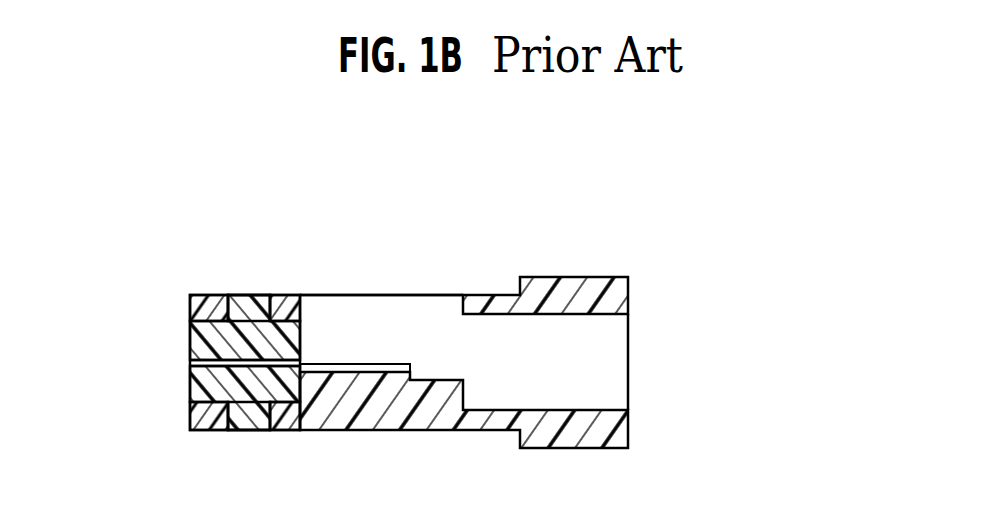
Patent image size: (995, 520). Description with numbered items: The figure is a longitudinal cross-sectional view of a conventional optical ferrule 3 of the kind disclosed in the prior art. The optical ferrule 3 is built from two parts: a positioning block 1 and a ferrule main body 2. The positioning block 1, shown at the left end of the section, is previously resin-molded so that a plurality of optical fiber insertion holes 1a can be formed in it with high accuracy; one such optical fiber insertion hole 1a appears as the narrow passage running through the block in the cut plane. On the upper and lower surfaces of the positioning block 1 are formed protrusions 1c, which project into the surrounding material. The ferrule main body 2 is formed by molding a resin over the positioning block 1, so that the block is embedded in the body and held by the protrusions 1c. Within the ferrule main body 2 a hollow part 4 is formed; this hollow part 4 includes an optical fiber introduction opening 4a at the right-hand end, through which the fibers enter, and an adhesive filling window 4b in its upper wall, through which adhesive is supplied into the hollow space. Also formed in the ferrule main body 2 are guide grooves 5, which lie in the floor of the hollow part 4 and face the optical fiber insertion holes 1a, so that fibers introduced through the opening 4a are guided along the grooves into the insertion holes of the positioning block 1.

The positioning block 1 is at (198, 348).
The optical fiber insertion holes 1a is at (193, 363).
The protrusions 1c is at (240, 303).
The ferrule main body 2 is at (563, 277).
The optical ferrule 3 is at (472, 262).
The hollow part 4 is at (482, 397).
The optical fiber introduction opening 4a is at (605, 348).
The adhesive filling window 4b is at (403, 308).
The guide grooves 5 is at (330, 368).